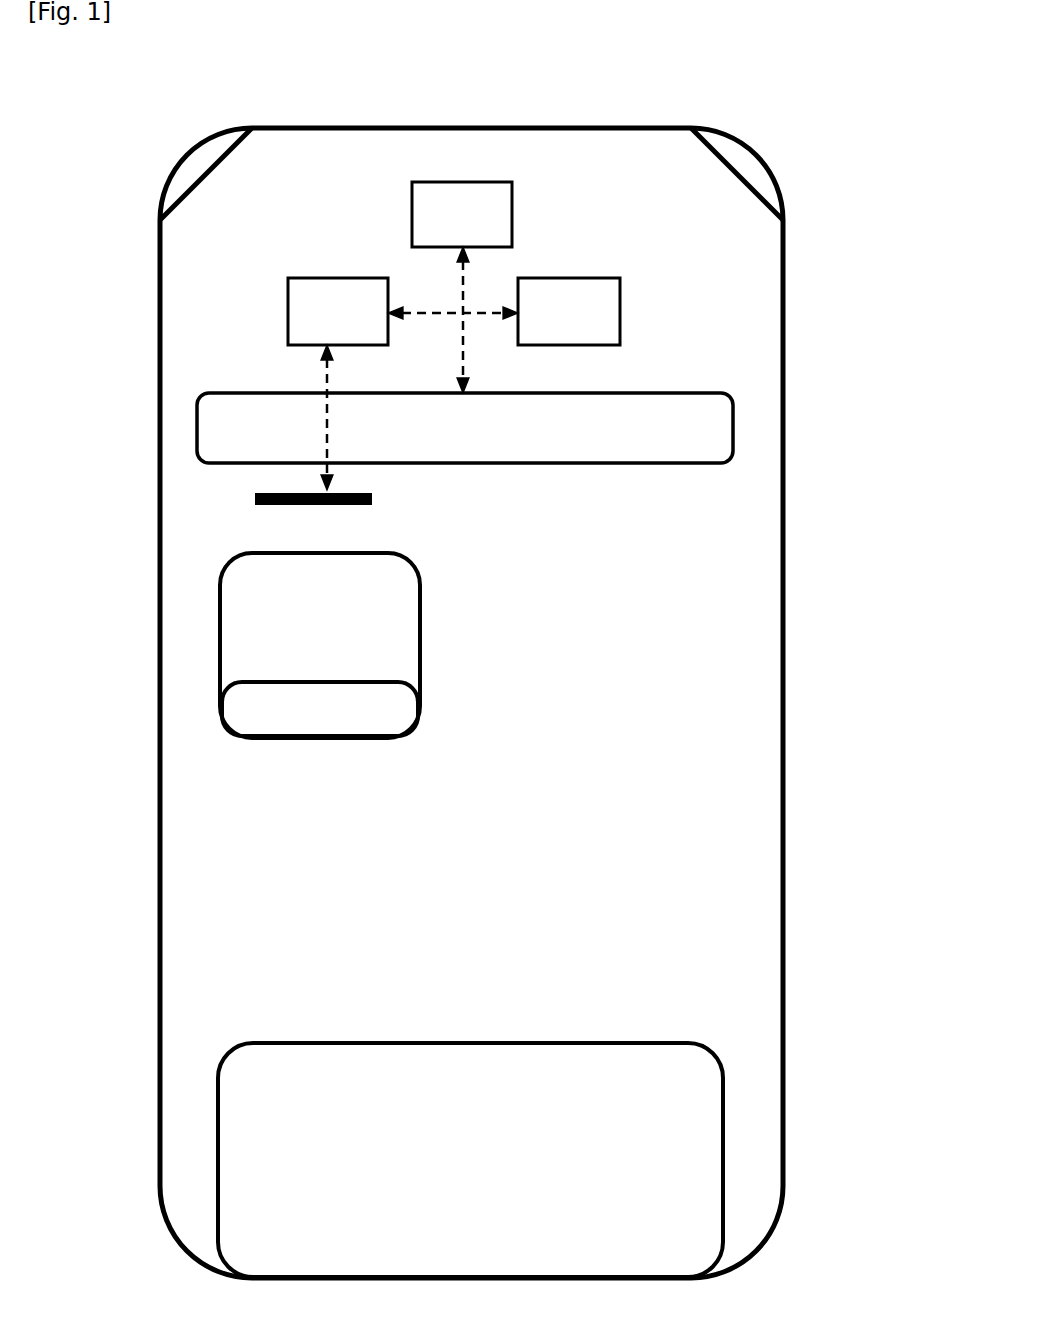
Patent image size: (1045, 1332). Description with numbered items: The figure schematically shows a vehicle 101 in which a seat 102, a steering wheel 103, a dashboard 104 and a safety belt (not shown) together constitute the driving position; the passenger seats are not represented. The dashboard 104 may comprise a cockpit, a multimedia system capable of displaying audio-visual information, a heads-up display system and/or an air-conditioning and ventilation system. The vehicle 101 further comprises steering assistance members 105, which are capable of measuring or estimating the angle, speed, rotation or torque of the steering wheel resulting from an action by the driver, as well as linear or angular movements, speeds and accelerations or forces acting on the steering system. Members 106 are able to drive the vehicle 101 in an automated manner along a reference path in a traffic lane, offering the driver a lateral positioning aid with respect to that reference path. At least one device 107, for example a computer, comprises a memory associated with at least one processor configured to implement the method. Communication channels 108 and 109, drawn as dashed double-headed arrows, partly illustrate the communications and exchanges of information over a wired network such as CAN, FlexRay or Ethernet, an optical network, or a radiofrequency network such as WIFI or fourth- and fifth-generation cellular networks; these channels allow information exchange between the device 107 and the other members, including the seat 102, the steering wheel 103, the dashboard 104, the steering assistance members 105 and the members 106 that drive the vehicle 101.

The vehicle 101 is at (805, 110).
The seat 102 is at (313, 740).
The steering wheel 103 is at (250, 497).
The dashboard 104 is at (237, 391).
The steering assistance members 105 is at (338, 311).
The members able to drive the vehicle in an automated manner 106 is at (569, 311).
The device 107 is at (462, 214).
The communication channel 108 is at (333, 407).
The communication channel 109 is at (437, 310).